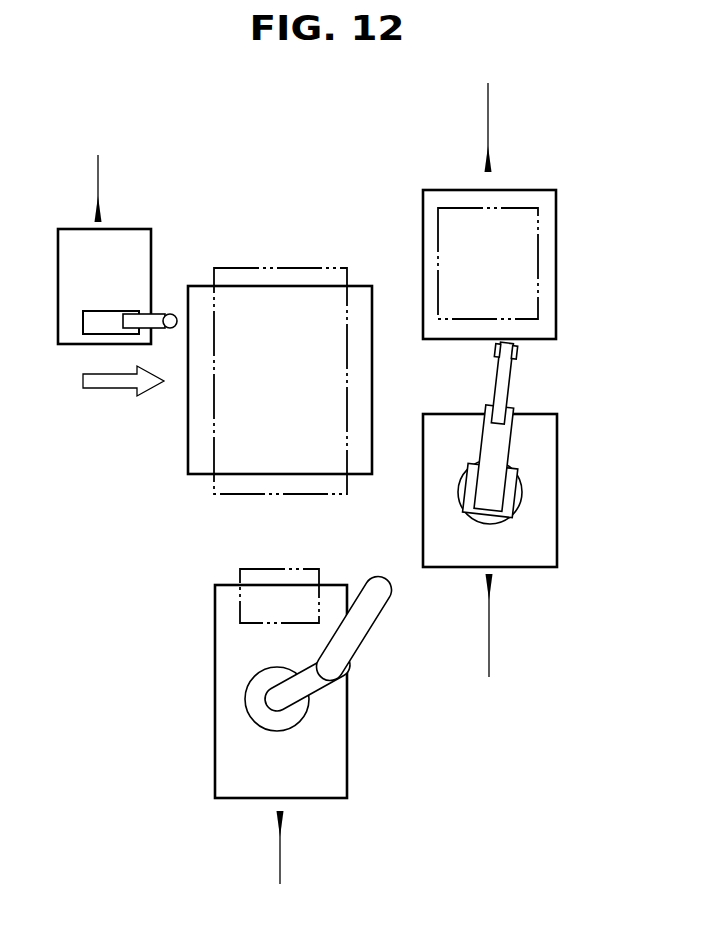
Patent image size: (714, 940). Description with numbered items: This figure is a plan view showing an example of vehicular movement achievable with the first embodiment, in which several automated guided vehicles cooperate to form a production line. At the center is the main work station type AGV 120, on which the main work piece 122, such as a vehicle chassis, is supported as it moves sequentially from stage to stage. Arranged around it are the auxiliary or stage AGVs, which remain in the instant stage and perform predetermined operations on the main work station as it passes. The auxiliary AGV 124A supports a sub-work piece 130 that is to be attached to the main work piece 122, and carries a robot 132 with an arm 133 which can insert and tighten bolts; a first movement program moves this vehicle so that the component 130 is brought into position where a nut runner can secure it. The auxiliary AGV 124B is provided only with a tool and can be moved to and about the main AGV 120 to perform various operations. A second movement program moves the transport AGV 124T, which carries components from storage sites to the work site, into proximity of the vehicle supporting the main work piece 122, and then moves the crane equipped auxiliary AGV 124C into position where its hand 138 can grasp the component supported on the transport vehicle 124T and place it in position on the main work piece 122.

The main work station type AGV 120 is at (188, 441).
The main work piece 122 is at (214, 494).
The auxiliary AGV 124A is at (215, 697).
The auxiliary AGV 124B is at (151, 241).
The auxiliary AGV 124C is at (543, 548).
The transport AGV 124T is at (423, 233).
The sub-work piece 130 is at (240, 572).
The robot 132 is at (292, 735).
The arm 133 is at (362, 634).
The crane 138 is at (536, 366).